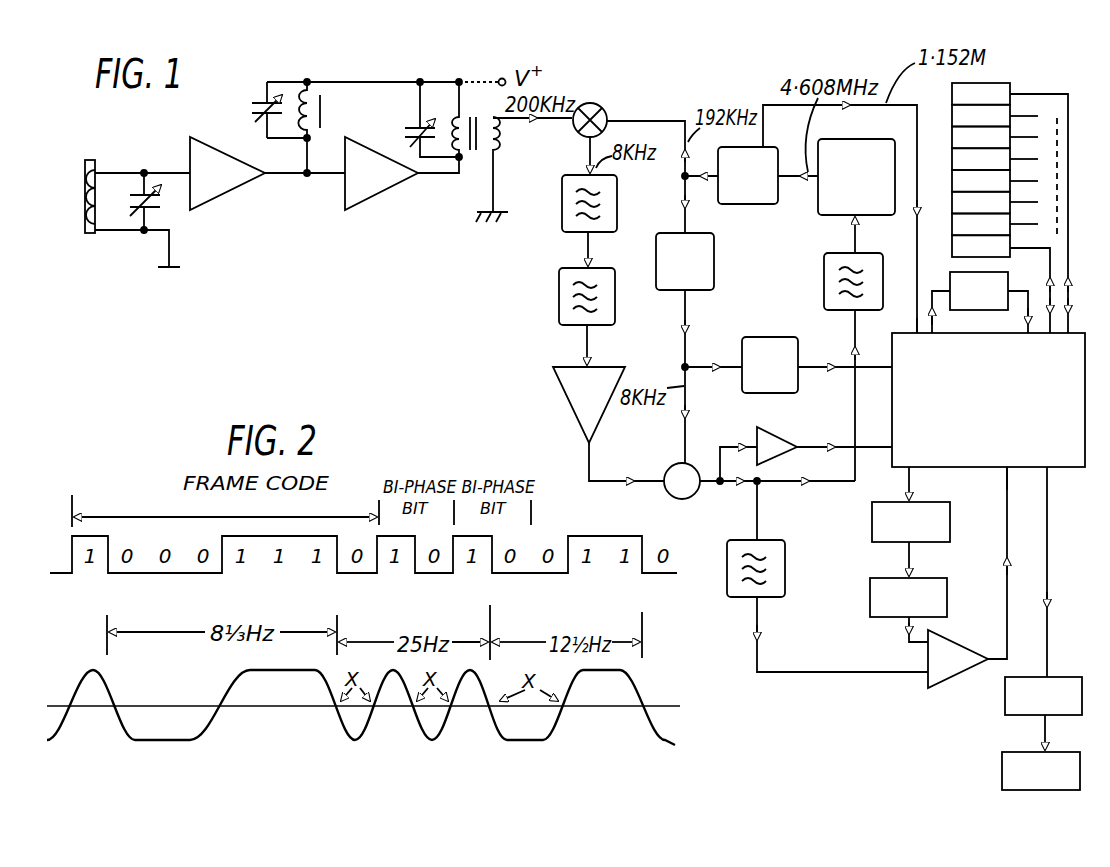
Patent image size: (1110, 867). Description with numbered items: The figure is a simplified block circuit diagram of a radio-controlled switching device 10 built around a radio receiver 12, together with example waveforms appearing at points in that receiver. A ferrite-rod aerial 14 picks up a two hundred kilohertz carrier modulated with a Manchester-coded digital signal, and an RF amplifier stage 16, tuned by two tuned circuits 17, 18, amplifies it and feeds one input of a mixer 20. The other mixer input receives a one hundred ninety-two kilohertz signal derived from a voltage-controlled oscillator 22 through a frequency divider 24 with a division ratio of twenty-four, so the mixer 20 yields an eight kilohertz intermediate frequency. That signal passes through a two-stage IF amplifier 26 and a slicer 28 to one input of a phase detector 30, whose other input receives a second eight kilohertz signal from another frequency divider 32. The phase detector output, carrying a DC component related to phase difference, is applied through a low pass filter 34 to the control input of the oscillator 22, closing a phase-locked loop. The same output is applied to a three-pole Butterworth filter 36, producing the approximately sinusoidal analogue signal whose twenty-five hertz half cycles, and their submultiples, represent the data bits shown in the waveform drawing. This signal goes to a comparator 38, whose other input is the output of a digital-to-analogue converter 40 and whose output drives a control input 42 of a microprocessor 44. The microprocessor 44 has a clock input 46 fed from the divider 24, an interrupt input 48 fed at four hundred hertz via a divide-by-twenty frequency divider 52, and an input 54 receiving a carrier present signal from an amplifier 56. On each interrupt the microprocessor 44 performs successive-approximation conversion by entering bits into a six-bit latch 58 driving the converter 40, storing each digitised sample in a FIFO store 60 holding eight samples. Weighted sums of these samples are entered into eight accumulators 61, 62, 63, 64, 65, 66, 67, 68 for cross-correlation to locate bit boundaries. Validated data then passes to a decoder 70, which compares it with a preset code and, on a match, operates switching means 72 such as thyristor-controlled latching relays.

The radio-controlled switching device 10 is at (445, 298).
The radio receiver 12 is at (640, 110).
The ferrite-rod aerial 14 is at (94, 161).
The RF amplifier stage 16 is at (317, 197).
The tuned circuit 17 is at (313, 126).
The tuned circuit 18 is at (471, 160).
The mixer 20 is at (600, 105).
The voltage-controlled oscillator 22 is at (882, 140).
The frequency divider 24 is at (763, 204).
The two-stage IF amplifier 26 is at (559, 271).
The slicer 28 is at (568, 391).
The phase detector 30 is at (669, 469).
The frequency divider 32 is at (714, 265).
The low pass filter 34 is at (824, 278).
The three-pole Butterworth filter 36 is at (736, 540).
The comparator 38 is at (960, 654).
The digital-to-analogue converter 40 is at (945, 580).
The control input 42 is at (1007, 490).
The microprocessor 44 is at (988, 400).
The clock input 46 is at (916, 326).
The interrupt input 48 is at (880, 374).
The divide-by-twenty frequency divider 52 is at (797, 322).
The input 54 is at (880, 447).
The amplifier 56 is at (758, 432).
The 6-bit latch 58 is at (872, 520).
The first-in, first-out store 60 is at (1009, 282).
The accumulator 61 is at (1010, 208).
The accumulator 62 is at (995, 116).
The accumulator 63 is at (995, 138).
The accumulator 64 is at (995, 159).
The accumulator 65 is at (995, 181).
The accumulator 66 is at (995, 203).
The accumulator 67 is at (995, 225).
The accumulator 68 is at (1001, 284).
The decoder 70 is at (1053, 677).
The switching means 72 is at (1002, 755).